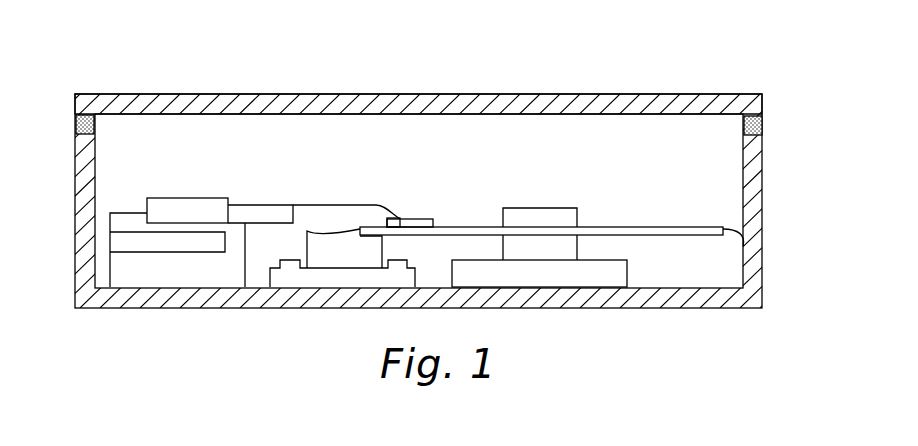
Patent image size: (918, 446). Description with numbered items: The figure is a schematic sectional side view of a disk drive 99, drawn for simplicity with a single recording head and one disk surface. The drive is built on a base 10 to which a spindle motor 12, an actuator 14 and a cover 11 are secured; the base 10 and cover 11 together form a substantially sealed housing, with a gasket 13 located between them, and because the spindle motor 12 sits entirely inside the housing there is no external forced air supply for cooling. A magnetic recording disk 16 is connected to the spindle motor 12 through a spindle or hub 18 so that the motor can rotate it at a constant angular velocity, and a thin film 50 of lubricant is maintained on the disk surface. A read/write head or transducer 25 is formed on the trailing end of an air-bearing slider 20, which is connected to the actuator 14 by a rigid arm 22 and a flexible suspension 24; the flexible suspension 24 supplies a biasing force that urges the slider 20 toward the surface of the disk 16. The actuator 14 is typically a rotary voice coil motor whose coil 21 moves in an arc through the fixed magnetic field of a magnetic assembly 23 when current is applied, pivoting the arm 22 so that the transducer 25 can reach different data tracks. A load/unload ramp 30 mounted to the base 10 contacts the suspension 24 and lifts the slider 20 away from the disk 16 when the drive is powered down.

The disk drive 99 is at (728, 32).
The base 10 is at (712, 308).
The cover 11 is at (153, 102).
The spindle motor 12 is at (627, 276).
The gasket 13 is at (75, 128).
The actuator 14 is at (245, 262).
The magnetic recording disk 16 is at (744, 244).
The spindle or hub 18 is at (553, 208).
The air-bearing slider 20 is at (425, 219).
The coil 21 is at (192, 203).
The rigid arm 22 is at (267, 212).
The magnetic assembly 23 is at (128, 232).
The flexible suspension 24 is at (352, 205).
The read/write head or transducer 25 is at (393, 218).
The load/unload ramp 30 is at (323, 231).
The thin film of lubricant 50 is at (688, 227).